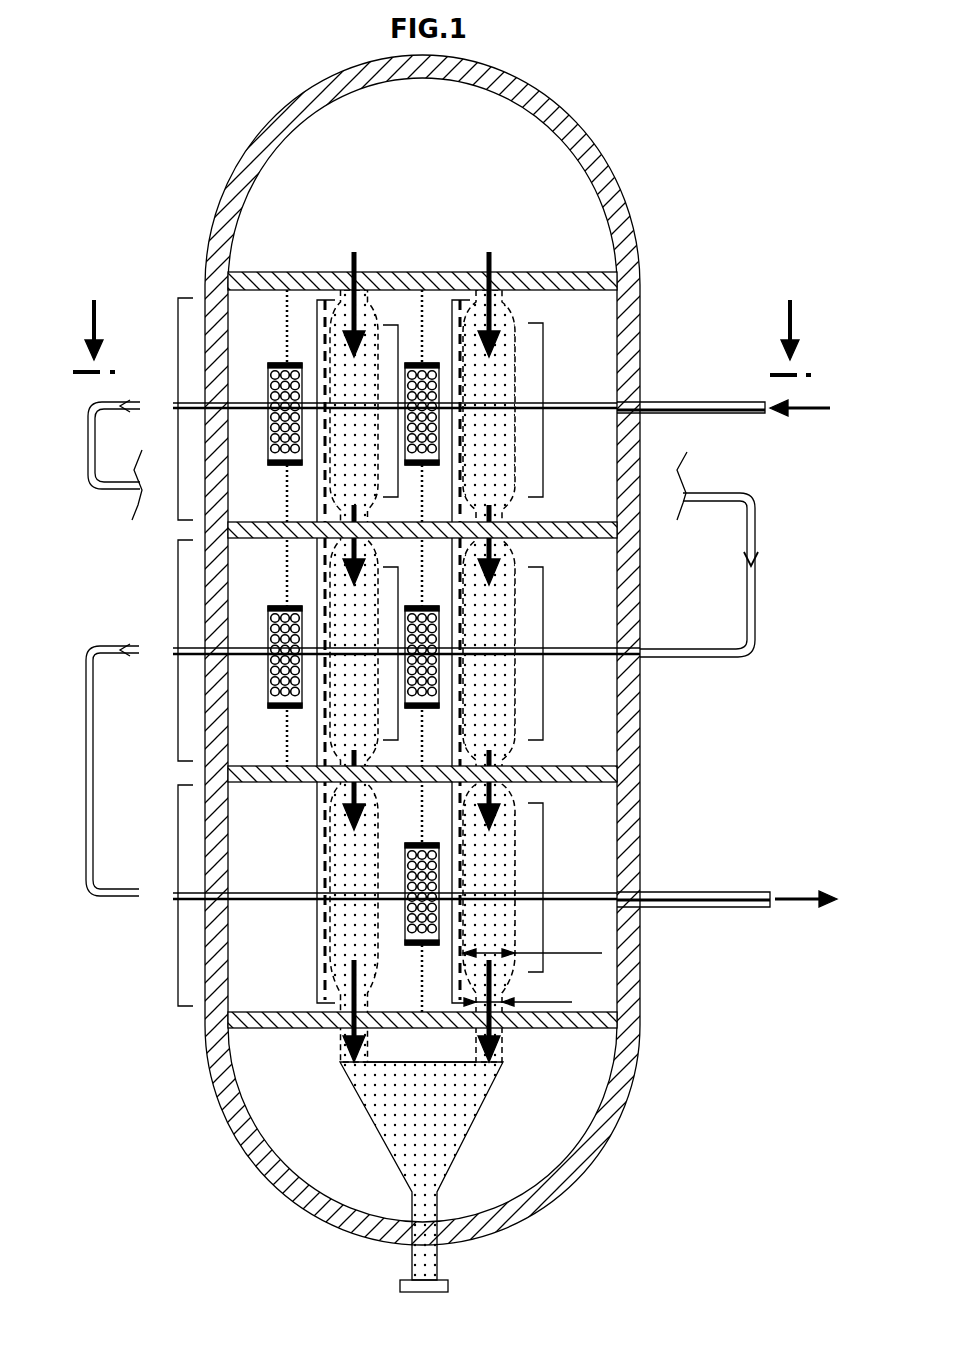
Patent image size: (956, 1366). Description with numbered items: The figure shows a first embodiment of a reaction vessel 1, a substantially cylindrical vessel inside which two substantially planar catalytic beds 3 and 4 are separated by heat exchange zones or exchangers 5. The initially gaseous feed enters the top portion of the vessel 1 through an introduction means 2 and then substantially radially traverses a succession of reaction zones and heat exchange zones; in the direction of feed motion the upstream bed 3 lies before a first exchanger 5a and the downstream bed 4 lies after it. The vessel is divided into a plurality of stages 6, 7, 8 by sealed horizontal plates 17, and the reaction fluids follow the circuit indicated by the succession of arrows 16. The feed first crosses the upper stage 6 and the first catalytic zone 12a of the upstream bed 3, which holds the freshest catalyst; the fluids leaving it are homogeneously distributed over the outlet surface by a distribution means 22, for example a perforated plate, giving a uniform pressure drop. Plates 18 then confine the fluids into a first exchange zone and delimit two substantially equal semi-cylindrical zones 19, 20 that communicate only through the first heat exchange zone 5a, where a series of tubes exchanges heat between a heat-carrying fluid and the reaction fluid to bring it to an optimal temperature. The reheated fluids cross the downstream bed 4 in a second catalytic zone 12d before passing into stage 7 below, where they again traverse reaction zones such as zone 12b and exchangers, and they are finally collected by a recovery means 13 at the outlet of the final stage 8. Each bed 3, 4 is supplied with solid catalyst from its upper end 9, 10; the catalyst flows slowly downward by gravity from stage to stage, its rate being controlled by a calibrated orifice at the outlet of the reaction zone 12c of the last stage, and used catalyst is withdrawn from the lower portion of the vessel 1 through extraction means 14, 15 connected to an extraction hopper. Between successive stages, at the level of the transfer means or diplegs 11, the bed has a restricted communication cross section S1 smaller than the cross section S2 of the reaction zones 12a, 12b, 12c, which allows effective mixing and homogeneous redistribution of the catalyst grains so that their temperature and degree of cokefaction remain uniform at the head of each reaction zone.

The reaction vessel 1 is at (604, 131).
The introduction means 2 is at (703, 402).
The upstream catalytic bed 3 is at (452, 952).
The downstream catalytic bed 4 is at (317, 952).
The heat exchangers 5 is at (274, 462).
The first heat exchange zone 5a is at (435, 442).
The upper stage 6 is at (178, 368).
The second stage 7 is at (178, 616).
The final stage 8 is at (178, 859).
The upper end of upstream bed 9 is at (489, 288).
The upper end of downstream bed 10 is at (352, 288).
The transfer means or diplegs 11 is at (498, 522).
The first catalytic reaction zone 12a is at (543, 382).
The second-stage reaction zone 12b is at (543, 630).
The last-stage reaction zone 12c is at (545, 876).
The second catalytic zone 12d is at (399, 362).
The recovery means 13 is at (708, 892).
The extraction means 14 is at (343, 1036).
The extraction means 15 is at (503, 1034).
The flow arrows 16 is at (750, 605).
The sealed horizontal plates 17 is at (592, 541).
The plates 18 is at (408, 322).
The semi-cylindrical zone 19 is at (584, 325).
The semi-cylindrical zone 20 is at (246, 326).
The distribution means 22 is at (322, 330).
The restricted communication cross section S1 is at (521, 990).
The reaction zone cross section S2 is at (532, 941).